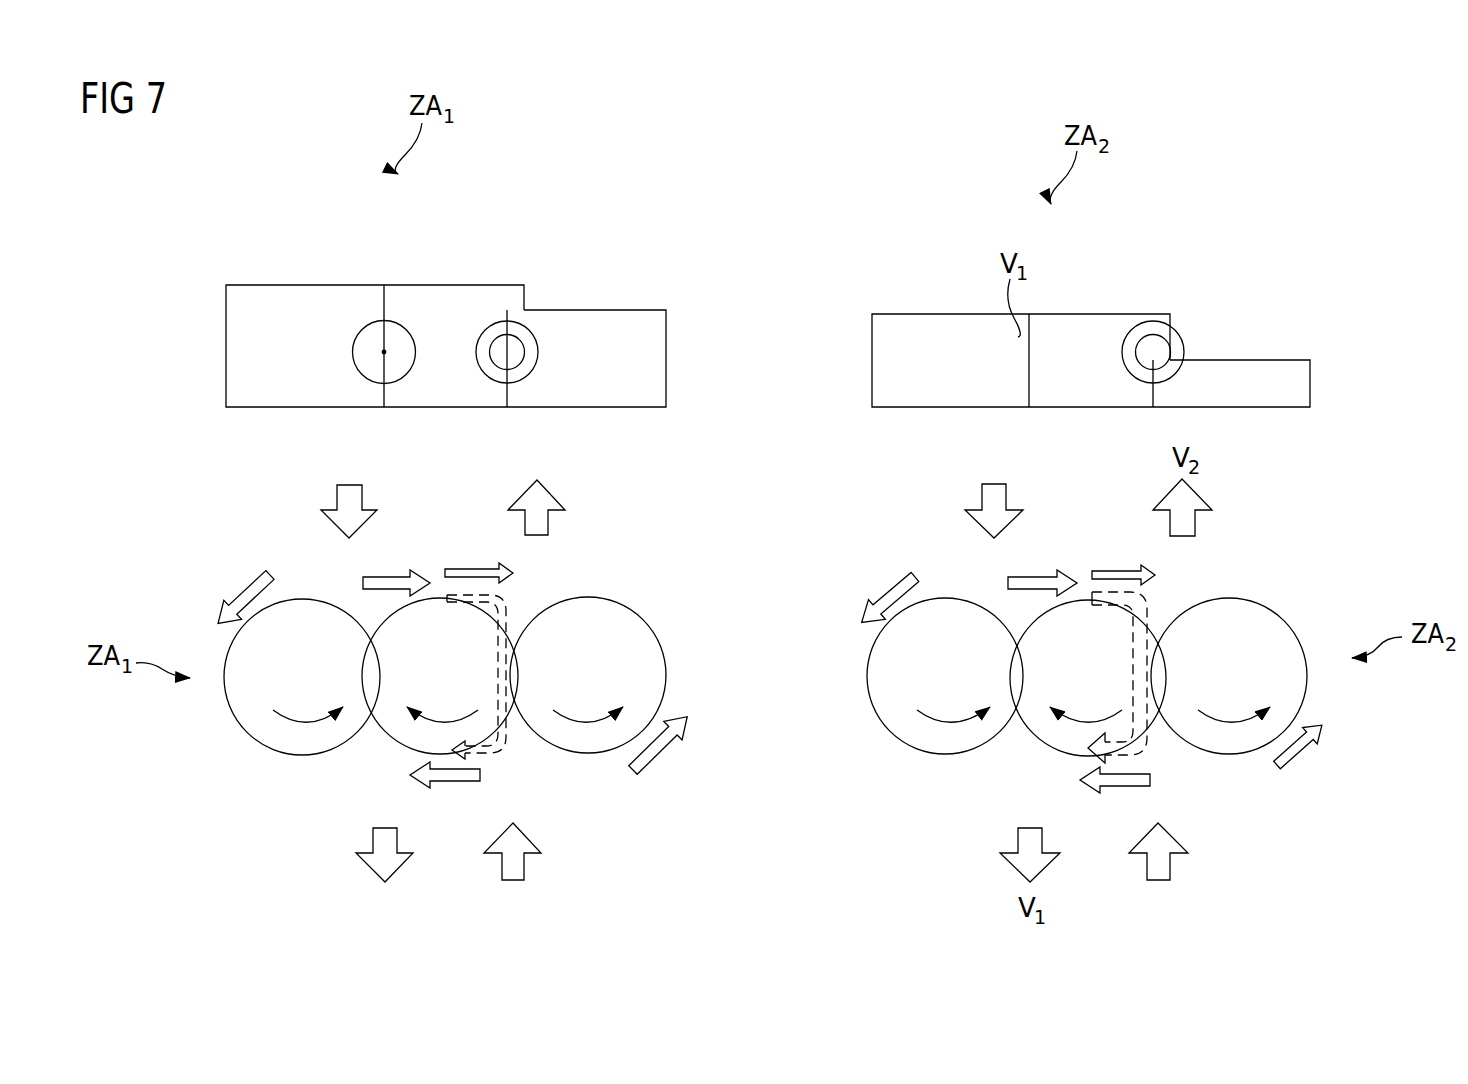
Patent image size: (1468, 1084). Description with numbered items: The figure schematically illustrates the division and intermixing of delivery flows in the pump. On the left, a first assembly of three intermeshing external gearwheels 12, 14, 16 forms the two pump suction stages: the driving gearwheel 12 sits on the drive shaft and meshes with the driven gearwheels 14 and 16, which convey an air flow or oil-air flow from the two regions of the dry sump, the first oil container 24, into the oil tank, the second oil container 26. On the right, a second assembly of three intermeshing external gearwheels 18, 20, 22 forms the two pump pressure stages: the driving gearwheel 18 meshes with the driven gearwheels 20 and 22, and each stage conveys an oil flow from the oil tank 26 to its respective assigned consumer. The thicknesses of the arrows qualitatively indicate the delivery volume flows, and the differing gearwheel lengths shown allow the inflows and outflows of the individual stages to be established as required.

The external gearwheel 12 is at (427, 300).
The external gearwheel 14 is at (272, 300).
The external gearwheel 16 is at (595, 330).
The external gearwheel 18 is at (1083, 332).
The external gearwheel 20 is at (918, 332).
The external gearwheel 22 is at (1250, 378).
The first oil container 24 is at (490, 335).
The second oil container 26 is at (372, 337).